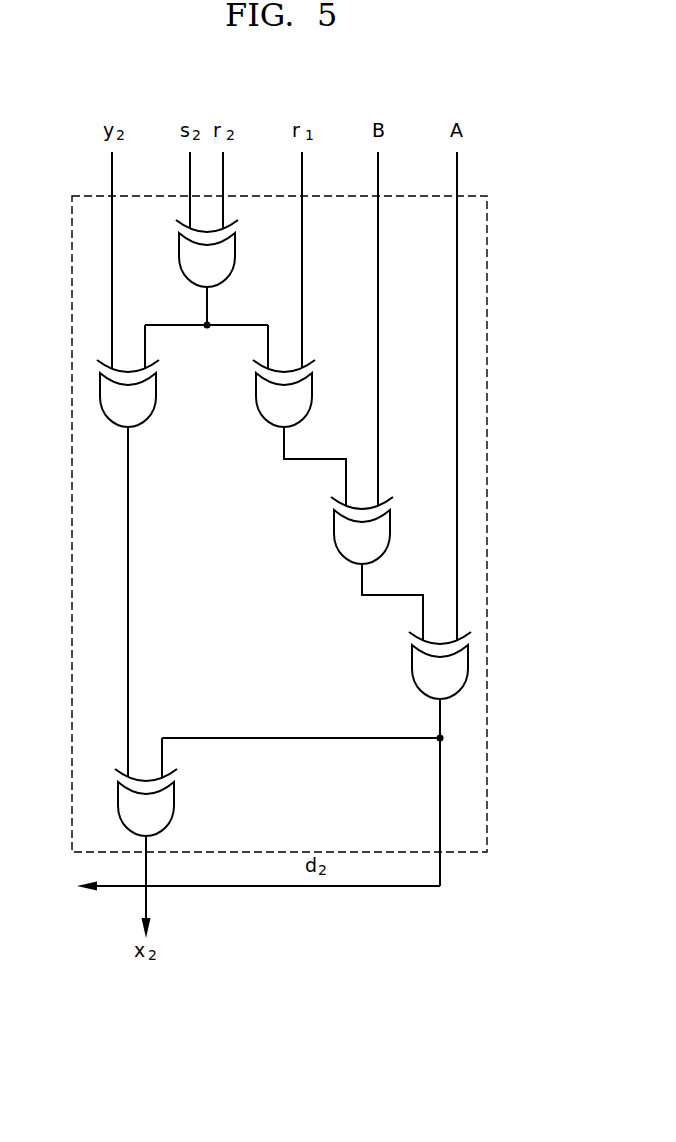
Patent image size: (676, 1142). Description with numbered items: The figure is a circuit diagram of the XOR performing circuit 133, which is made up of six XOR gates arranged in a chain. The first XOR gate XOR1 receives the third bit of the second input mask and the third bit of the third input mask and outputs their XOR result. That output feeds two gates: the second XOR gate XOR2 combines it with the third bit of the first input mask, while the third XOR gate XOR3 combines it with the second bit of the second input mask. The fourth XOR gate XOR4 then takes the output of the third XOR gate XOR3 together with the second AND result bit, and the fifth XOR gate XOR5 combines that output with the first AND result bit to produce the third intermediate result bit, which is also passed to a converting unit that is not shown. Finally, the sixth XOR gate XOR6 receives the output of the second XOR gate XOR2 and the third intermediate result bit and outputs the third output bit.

The XOR performing circuit 133 is at (487, 487).
The first XOR gate XOR1 is at (233, 265).
The second XOR gate XOR2 is at (150, 413).
The third XOR gate XOR3 is at (308, 408).
The fourth XOR gate XOR4 is at (340, 552).
The fifth XOR gate XOR5 is at (418, 687).
The sixth XOR gate XOR6 is at (173, 797).